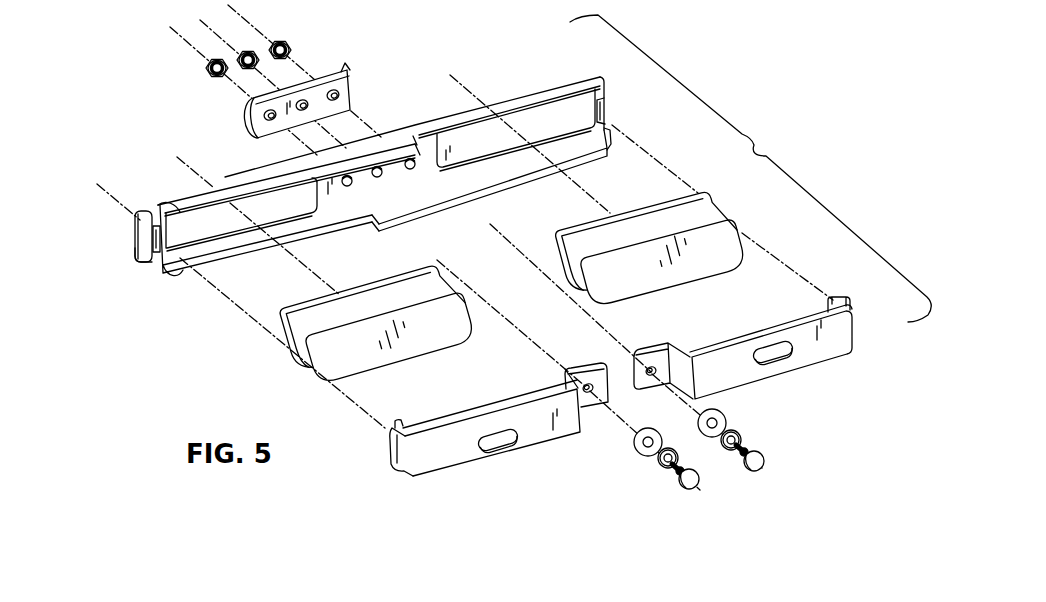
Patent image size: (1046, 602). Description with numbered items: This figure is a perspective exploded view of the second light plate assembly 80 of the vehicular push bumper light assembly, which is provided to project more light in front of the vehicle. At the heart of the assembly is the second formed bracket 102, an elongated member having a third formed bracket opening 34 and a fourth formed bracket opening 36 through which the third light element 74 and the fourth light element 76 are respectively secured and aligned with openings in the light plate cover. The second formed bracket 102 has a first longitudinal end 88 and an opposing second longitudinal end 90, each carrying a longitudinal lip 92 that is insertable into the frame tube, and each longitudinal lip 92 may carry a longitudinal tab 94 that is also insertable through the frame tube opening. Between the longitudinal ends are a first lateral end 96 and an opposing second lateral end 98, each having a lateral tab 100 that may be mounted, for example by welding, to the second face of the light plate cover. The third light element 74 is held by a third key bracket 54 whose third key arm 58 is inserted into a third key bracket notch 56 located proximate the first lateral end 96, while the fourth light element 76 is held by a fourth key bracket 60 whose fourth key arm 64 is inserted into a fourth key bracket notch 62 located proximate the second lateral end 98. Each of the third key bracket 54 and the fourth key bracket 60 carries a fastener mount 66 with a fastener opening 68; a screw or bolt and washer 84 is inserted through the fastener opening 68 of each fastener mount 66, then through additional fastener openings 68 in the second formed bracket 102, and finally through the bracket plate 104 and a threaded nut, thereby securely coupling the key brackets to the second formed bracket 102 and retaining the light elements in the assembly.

The third formed bracket opening 34 is at (537, 122).
The fourth formed bracket opening 36 is at (187, 222).
The third key bracket 54 is at (830, 358).
The third key bracket notch 56 is at (606, 106).
The third key arm 58 is at (836, 297).
The fourth key bracket 60 is at (457, 468).
The fourth key bracket notch 62 is at (158, 254).
The fourth key arm 64 is at (397, 444).
The fastener mount 66 is at (632, 362).
The fastener opening 68 is at (409, 169).
The third light element 74 is at (684, 283).
The fourth light element 76 is at (406, 357).
The second light plate assembly 80 is at (750, 168).
The screw or bolt and washer 84 is at (677, 472).
The first longitudinal end 88 is at (396, 135).
The second longitudinal end 90 is at (586, 153).
The longitudinal lip 92 is at (252, 183).
The longitudinal tab 94 is at (416, 137).
The first lateral end 96 is at (622, 132).
The second lateral end 98 is at (143, 260).
The lateral tab 100 is at (141, 234).
The second formed bracket 102 is at (464, 100).
The bracket plate 104 is at (348, 78).